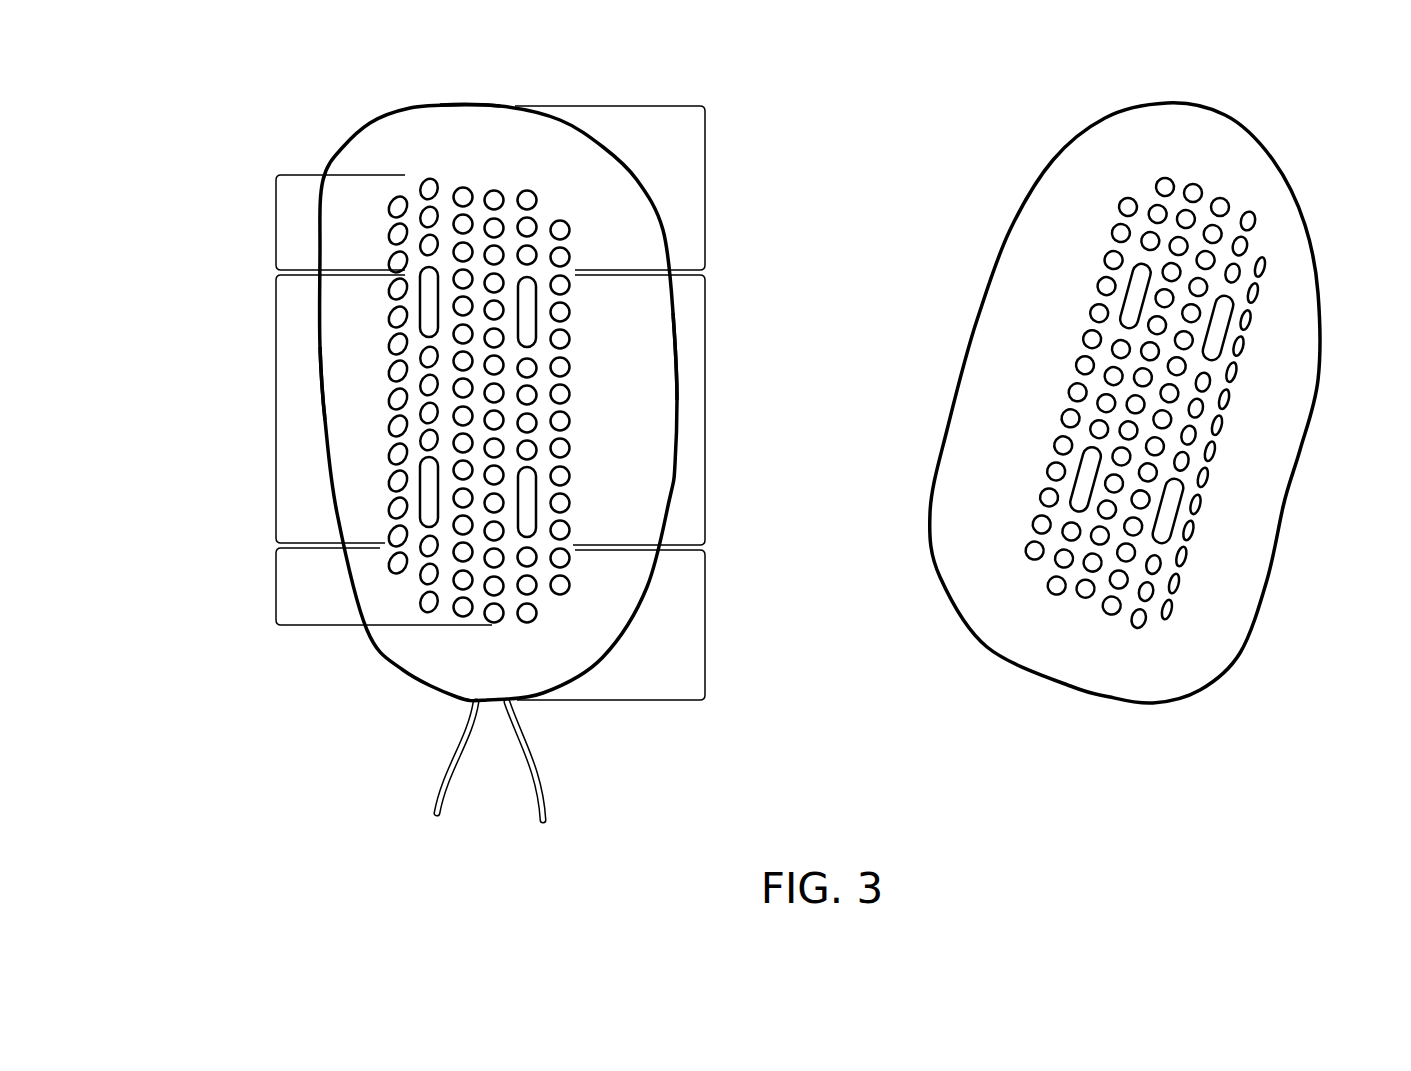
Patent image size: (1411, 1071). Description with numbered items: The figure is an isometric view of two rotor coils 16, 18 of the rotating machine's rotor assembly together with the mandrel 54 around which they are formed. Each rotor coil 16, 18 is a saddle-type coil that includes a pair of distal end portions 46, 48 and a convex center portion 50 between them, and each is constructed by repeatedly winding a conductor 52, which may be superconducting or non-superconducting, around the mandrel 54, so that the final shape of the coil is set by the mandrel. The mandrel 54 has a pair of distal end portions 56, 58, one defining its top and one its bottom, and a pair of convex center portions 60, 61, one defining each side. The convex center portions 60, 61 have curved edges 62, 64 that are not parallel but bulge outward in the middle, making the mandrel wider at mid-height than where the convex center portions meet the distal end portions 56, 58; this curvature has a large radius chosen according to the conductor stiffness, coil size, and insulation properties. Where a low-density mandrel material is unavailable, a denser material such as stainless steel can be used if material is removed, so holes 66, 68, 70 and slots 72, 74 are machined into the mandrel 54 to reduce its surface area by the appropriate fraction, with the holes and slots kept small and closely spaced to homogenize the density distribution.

The rotor coil 16 is at (496, 376).
The rotor coil 18 is at (1157, 419).
The distal end portion 46 is at (705, 190).
The distal end portion 48 is at (705, 620).
The convex center portion 50 is at (705, 410).
The conductor 52 is at (551, 780).
The mandrel 54 is at (478, 106).
The distal end portion 56 is at (276, 220).
The distal end portion 58 is at (276, 576).
The convex center portion 60 is at (280, 409).
The convex center portion 61 is at (276, 406).
The curved edge 62 is at (677, 342).
The curved edge 64 is at (323, 453).
The hole 66 is at (1193, 184).
The hole 68 is at (1229, 207).
The hole 70 is at (1257, 223).
The slot 72 is at (1225, 327).
The slot 74 is at (1170, 515).